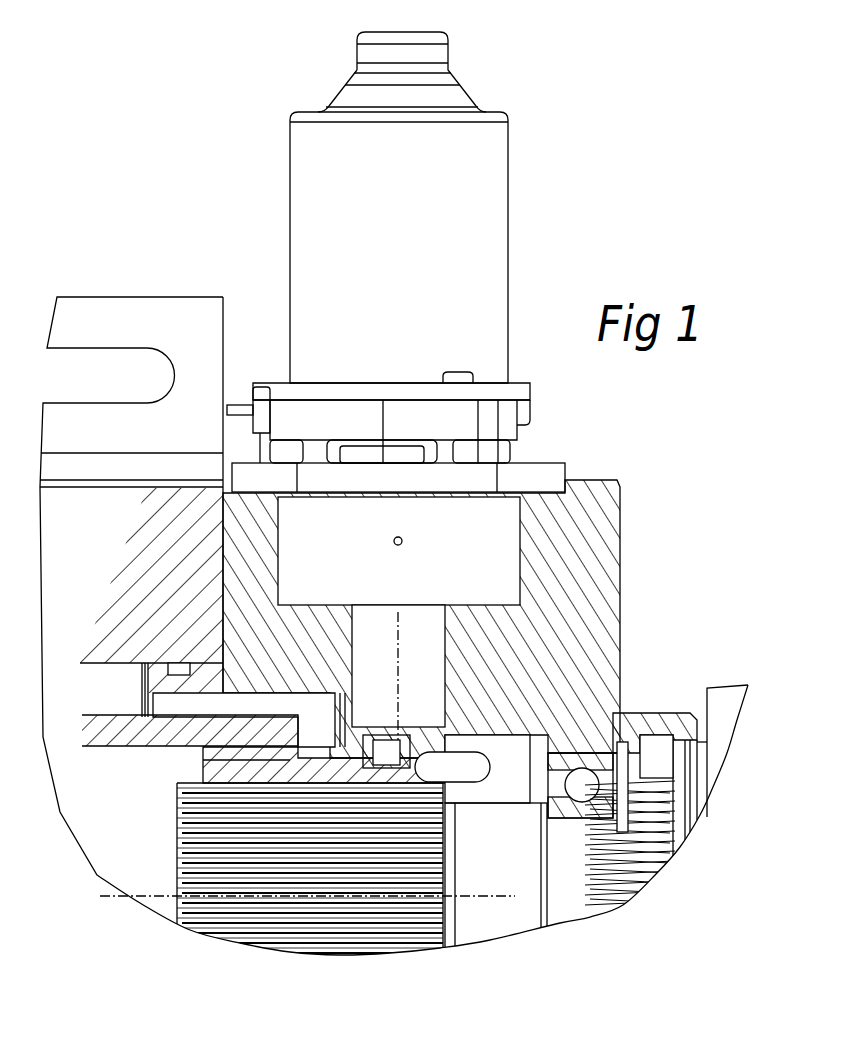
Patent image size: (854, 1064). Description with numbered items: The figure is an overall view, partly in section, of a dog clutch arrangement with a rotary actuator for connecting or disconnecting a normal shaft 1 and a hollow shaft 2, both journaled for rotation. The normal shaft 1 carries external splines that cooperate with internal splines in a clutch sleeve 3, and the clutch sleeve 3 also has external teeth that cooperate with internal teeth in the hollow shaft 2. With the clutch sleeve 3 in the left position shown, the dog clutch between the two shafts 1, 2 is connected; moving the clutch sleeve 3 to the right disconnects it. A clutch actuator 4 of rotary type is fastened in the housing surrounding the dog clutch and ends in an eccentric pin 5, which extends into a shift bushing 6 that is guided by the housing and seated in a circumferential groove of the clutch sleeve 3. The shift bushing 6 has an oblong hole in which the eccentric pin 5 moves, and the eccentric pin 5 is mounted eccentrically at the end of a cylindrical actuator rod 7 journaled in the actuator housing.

The normal shaft 1 is at (492, 922).
The hollow shaft 2 is at (110, 731).
The clutch sleeve 3 is at (218, 769).
The clutch actuator 4 is at (519, 269).
The eccentric pin 5 is at (388, 745).
The shift bushing 6 is at (385, 742).
The actuator rod 7 is at (427, 735).